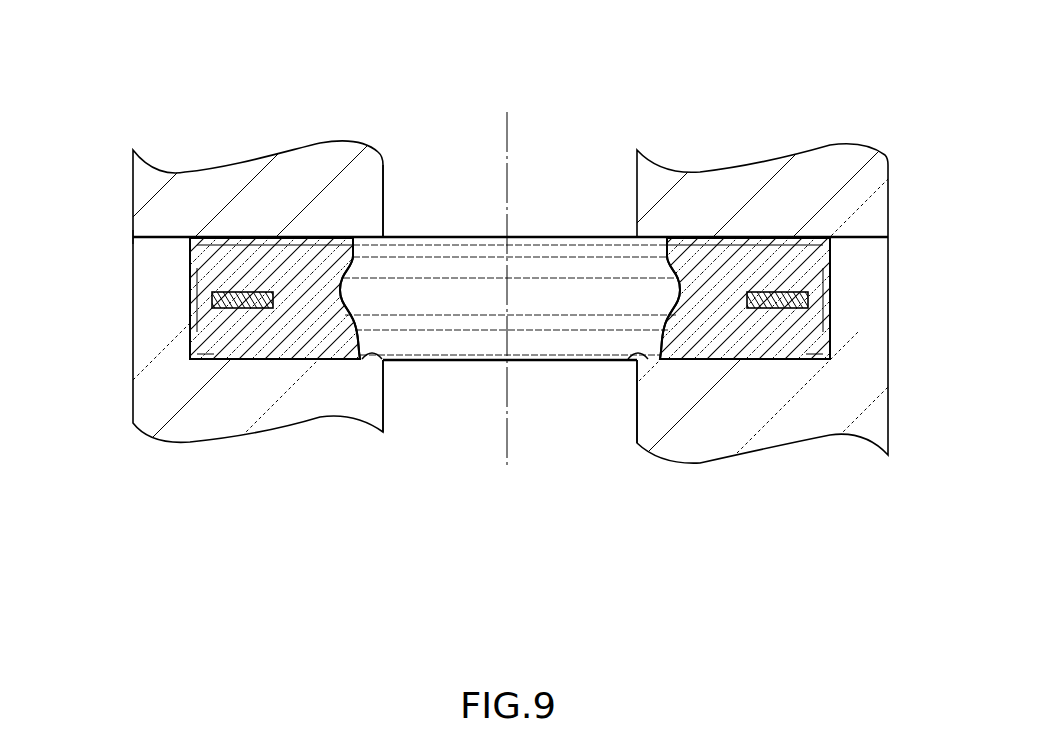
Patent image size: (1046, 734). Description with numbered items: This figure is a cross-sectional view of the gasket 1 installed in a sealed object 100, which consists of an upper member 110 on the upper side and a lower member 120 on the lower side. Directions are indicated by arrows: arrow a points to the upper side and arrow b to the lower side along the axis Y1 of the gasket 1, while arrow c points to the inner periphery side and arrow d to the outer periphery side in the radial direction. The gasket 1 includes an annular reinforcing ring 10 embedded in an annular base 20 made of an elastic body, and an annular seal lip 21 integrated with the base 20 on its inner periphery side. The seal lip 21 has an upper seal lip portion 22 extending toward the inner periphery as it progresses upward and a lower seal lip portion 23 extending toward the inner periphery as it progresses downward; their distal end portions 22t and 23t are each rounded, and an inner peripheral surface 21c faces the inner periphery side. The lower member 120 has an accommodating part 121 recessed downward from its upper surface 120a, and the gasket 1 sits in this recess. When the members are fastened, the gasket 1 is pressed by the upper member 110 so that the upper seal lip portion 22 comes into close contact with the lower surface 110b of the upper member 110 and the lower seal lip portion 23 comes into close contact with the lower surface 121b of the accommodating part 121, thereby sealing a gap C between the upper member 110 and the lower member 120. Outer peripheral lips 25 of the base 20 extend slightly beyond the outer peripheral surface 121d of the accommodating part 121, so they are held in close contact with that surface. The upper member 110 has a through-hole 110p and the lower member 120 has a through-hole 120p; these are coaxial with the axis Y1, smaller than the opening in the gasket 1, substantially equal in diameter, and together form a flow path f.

The sealed object 100 is at (160, 83).
The upper member 110 is at (855, 192).
The lower surface 110b is at (277, 238).
The through-hole 110p is at (383, 208).
The lower member 120 is at (220, 400).
The upper surface 120a is at (170, 236).
The through-hole 120p is at (384, 373).
The accommodating part 121 is at (355, 302).
The lower surface 121b is at (637, 363).
The outer peripheral surface 121d is at (192, 330).
The gasket 1 is at (765, 278).
The reinforcing ring 10 is at (790, 282).
The base 20 is at (787, 335).
The seal lip 21 is at (712, 313).
The inner peripheral surface 21c is at (680, 282).
The upper seal lip portion 22 is at (715, 218).
The distal end portion 22t is at (354, 244).
The lower seal lip portion 23 is at (710, 365).
The distal end portion 23t is at (370, 357).
The outer peripheral lips 25 is at (830, 300).
The gap C is at (140, 237).
The axis Y1 is at (512, 130).
The arrow a is at (79, 118).
The arrow b is at (79, 405).
The arrow c is at (478, 568).
The arrow d is at (347, 568).
The flow path f is at (467, 118).